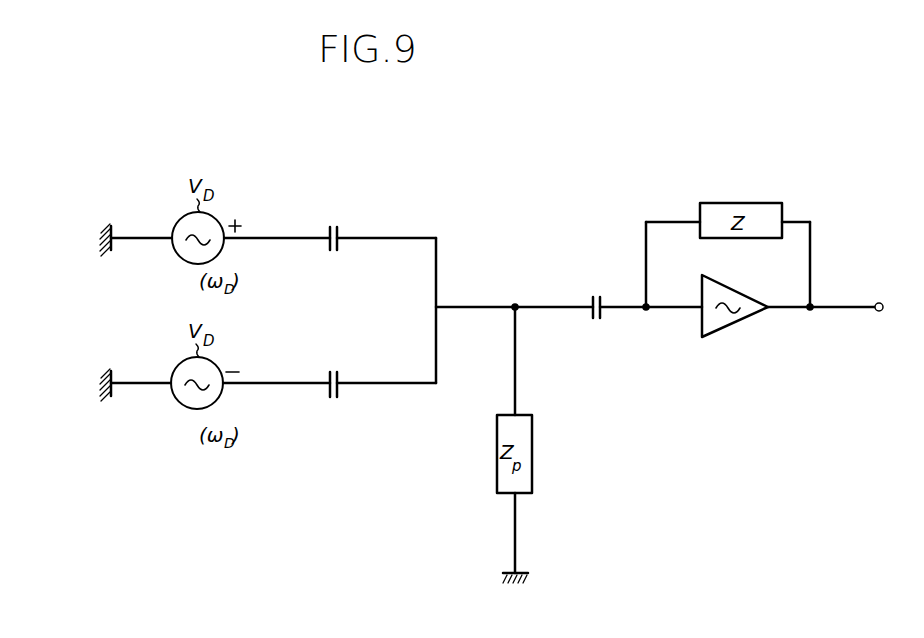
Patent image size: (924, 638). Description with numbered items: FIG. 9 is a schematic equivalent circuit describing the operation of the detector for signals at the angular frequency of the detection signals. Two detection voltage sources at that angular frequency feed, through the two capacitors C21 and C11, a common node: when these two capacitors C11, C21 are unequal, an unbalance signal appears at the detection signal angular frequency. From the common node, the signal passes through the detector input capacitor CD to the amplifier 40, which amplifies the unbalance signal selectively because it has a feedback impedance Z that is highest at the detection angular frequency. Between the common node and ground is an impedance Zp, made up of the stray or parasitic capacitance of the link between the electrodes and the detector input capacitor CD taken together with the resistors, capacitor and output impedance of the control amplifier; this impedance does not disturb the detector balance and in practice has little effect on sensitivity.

The amplifier 40 is at (726, 324).
The capacitor C21 is at (330, 225).
The capacitor C11 is at (331, 400).
The detector input capacitor CD is at (597, 322).